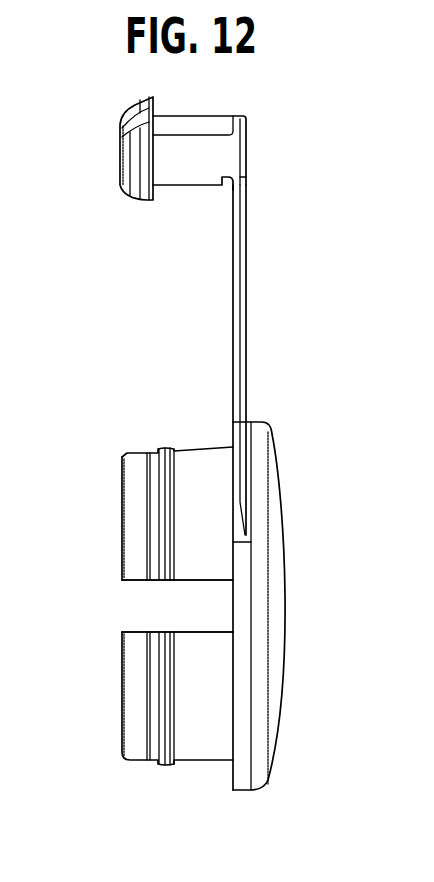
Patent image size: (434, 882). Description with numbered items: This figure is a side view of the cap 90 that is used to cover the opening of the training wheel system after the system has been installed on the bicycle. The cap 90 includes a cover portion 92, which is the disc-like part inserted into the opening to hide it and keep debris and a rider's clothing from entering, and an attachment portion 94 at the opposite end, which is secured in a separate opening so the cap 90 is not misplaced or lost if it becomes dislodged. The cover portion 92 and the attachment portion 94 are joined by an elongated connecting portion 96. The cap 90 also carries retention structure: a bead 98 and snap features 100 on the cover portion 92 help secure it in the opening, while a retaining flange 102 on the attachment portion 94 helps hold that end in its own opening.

The cap 90 is at (308, 342).
The cover portion 92 is at (282, 580).
The attachment portion 94 is at (247, 143).
The connecting portion 96 is at (233, 343).
The bead 98 is at (164, 450).
The snap features 100 is at (122, 580).
The retaining flange 102 is at (155, 197).